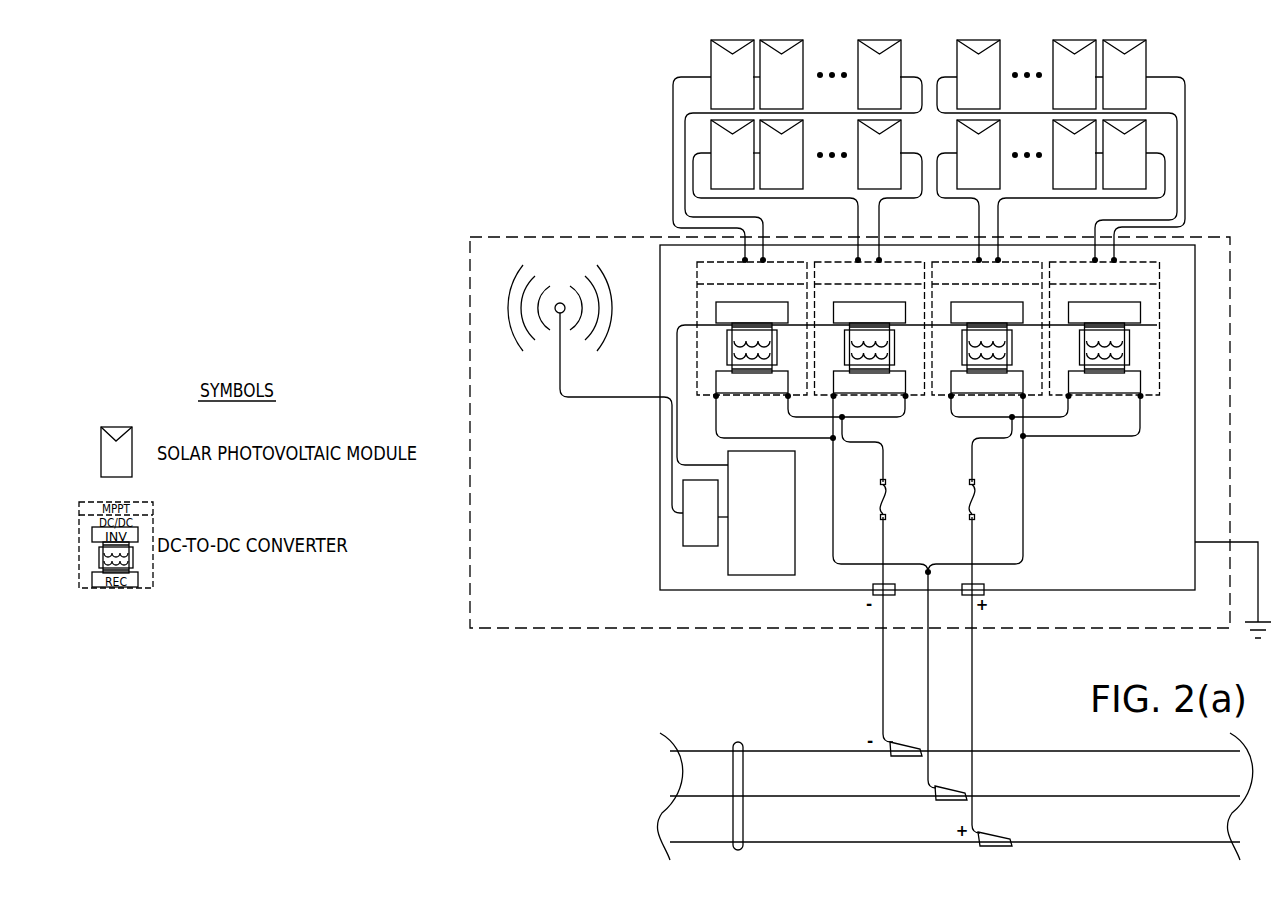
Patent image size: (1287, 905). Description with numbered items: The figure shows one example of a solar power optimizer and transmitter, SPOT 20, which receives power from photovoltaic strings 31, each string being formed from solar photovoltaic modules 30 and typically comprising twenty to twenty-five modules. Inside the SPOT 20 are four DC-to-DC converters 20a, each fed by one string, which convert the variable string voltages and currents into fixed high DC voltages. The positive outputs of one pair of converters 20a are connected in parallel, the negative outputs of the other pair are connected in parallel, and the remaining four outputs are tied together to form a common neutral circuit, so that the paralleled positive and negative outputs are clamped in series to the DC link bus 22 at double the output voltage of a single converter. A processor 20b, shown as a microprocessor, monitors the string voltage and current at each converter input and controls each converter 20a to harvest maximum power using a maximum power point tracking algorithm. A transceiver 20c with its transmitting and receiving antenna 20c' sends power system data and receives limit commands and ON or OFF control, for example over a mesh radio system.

The photovoltaic string 31 is at (907, 49).
The solar photovoltaic modules 30 is at (1140, 64).
The solar power optimizer and transmitter (SPOT) 20 is at (1213, 379).
The DC-to-DC converter 20a is at (704, 384).
The processor 20b is at (781, 558).
The transceiver 20c is at (696, 529).
The transmitting and receiving antenna 20c' is at (588, 389).
The DC link bus 22 is at (738, 742).